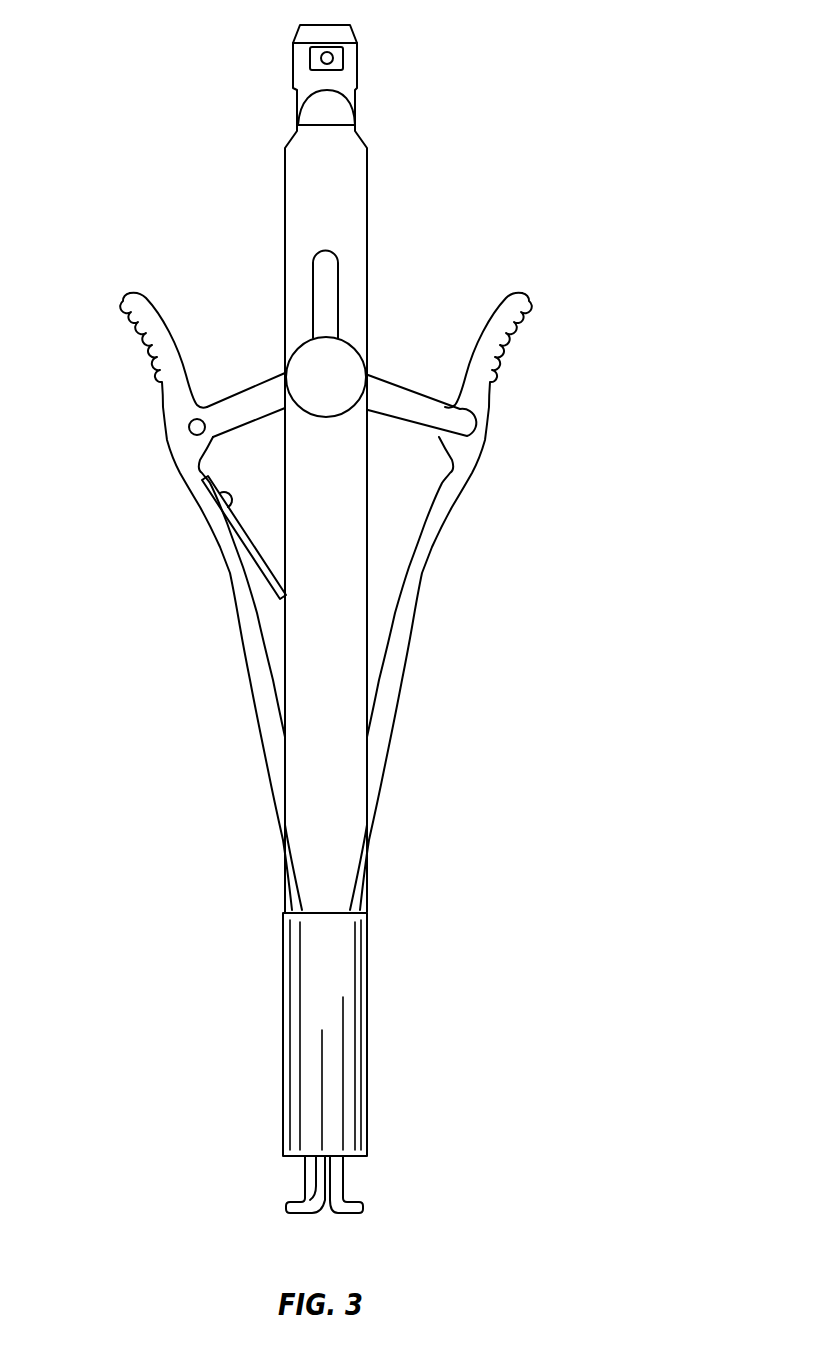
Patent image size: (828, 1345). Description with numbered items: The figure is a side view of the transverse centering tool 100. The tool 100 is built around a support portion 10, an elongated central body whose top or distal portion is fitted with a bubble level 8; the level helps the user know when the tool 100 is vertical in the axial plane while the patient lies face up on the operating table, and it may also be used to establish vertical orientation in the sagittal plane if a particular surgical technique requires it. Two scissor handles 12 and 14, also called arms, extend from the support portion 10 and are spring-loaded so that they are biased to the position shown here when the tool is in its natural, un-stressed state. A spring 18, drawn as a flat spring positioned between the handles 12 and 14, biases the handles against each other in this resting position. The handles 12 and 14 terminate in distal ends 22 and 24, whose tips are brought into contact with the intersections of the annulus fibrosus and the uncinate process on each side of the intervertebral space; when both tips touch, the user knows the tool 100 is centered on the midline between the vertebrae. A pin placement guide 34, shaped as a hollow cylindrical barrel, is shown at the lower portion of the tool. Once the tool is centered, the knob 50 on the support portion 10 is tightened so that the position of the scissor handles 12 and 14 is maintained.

The transverse centering tool 100 is at (574, 149).
The bubble level 8 is at (343, 57).
The support portion 10 is at (352, 214).
The scissor handle 12 is at (158, 342).
The scissor handle 14 is at (488, 378).
The spring 18 is at (267, 575).
The distal end 22 is at (313, 1177).
The distal end 24 is at (335, 1185).
The pin placement guide 34 is at (348, 982).
The knob 50 is at (347, 365).